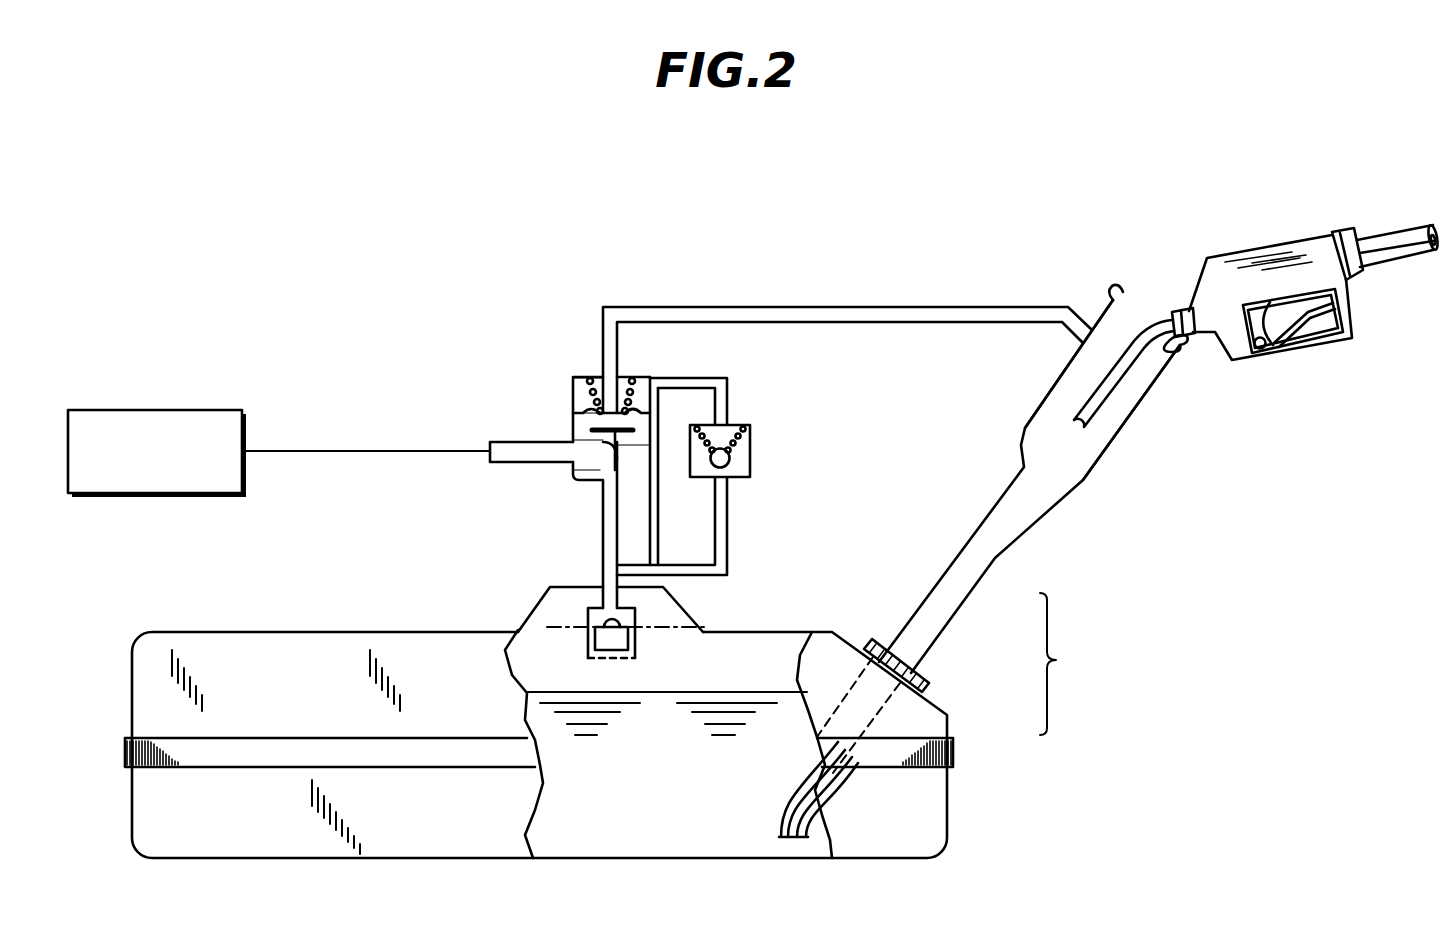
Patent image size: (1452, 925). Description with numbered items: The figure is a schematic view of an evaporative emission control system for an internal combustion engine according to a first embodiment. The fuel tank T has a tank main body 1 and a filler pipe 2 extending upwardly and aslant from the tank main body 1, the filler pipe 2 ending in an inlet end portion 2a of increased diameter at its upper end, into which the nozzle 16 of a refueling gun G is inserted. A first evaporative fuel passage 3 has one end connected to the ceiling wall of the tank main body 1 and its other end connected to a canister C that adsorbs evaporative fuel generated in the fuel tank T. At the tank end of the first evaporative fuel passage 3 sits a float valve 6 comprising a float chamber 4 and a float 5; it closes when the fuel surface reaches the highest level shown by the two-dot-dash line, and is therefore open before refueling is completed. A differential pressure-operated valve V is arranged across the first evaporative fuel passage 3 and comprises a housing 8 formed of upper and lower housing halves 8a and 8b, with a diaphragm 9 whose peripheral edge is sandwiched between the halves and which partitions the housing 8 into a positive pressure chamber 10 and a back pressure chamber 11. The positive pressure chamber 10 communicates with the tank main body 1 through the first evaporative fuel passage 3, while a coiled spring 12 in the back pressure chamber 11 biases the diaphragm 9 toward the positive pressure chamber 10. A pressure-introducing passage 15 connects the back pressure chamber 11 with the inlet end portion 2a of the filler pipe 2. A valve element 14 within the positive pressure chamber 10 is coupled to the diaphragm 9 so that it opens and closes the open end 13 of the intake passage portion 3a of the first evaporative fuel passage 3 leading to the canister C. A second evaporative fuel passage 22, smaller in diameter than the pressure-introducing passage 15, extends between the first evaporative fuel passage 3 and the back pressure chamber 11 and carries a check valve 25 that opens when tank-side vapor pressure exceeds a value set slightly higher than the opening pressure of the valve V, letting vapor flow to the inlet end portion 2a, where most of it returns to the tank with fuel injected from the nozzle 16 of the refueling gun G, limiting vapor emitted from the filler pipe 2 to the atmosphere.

The tank main body 1 is at (953, 723).
The filler pipe 2 is at (975, 583).
The inlet end portion 2a is at (1128, 405).
The first evaporative fuel passage 3 is at (513, 464).
The intake passage portion 3a is at (575, 466).
The float chamber 4 is at (630, 618).
The float 5 is at (581, 642).
The float valve 6 is at (591, 652).
The housing 8 is at (627, 378).
The upper housing half 8a is at (572, 392).
The lower housing half 8b is at (571, 440).
The diaphragm 9 is at (571, 426).
The positive pressure chamber 10 is at (635, 452).
The back pressure chamber 11 is at (575, 381).
The coiled spring 12 is at (655, 394).
The open end 13 is at (617, 440).
The valve element 14 is at (635, 434).
The pressure-introducing passage 15 is at (887, 307).
The nozzle 16 is at (1079, 440).
The second evaporative fuel passage 22 is at (727, 536).
The check valve 25 is at (752, 456).
The canister C is at (160, 410).
The refueling gun G is at (1197, 278).
The fuel tank T is at (1066, 664).
The differential pressure-operated valve V is at (563, 450).